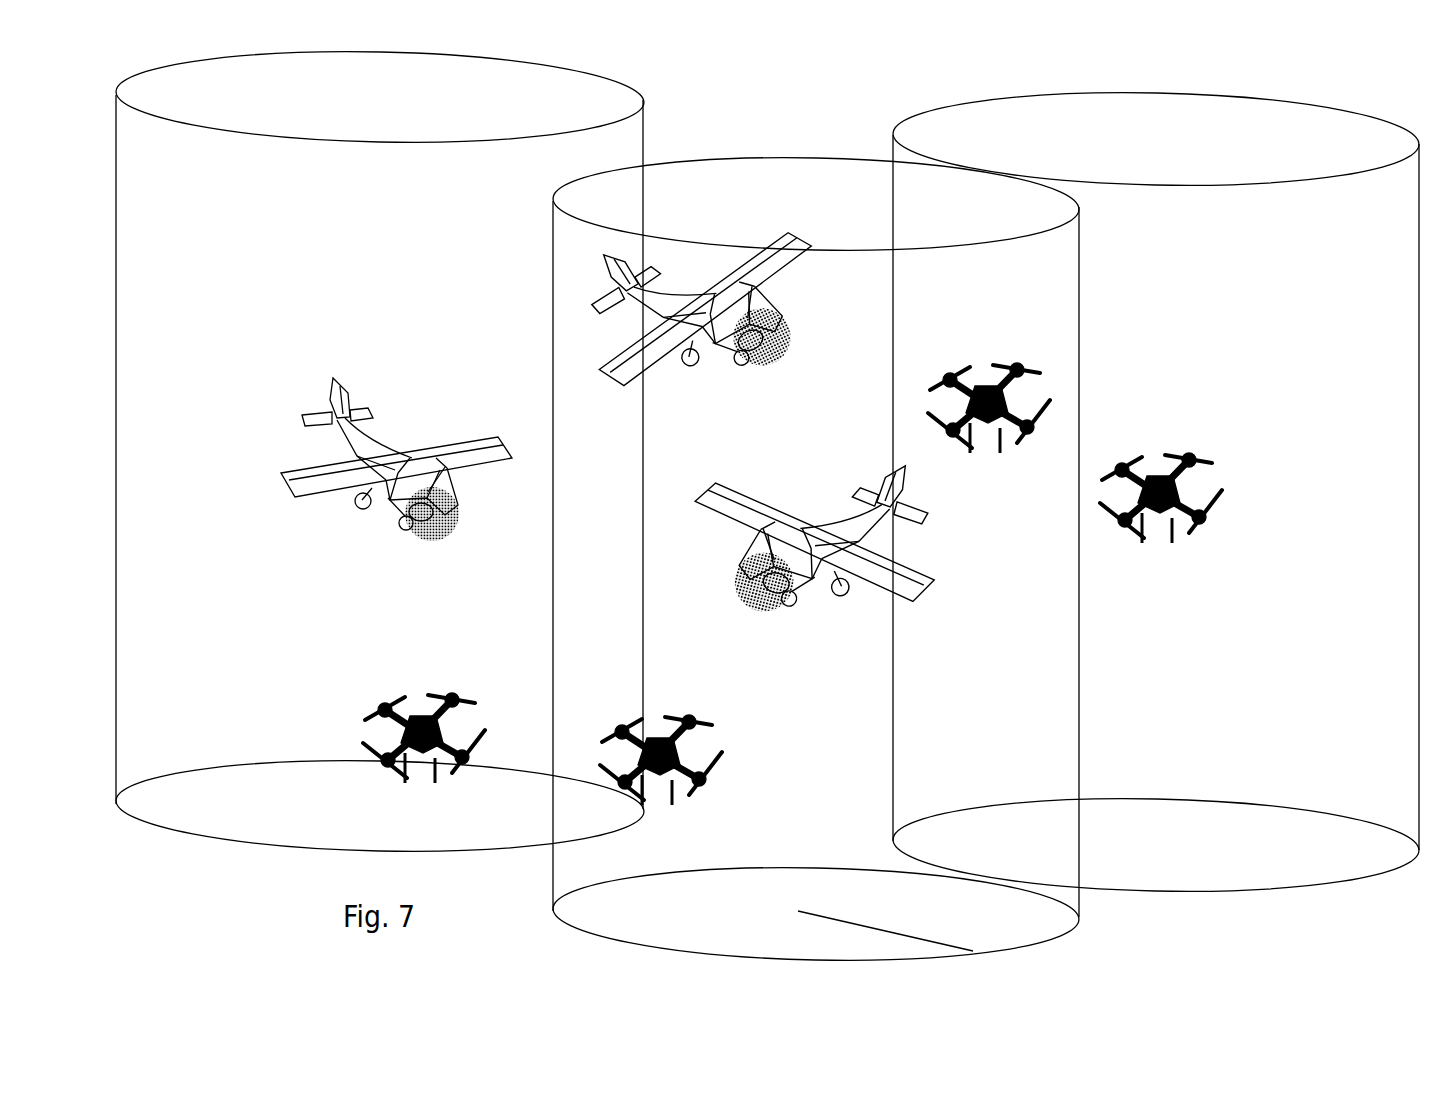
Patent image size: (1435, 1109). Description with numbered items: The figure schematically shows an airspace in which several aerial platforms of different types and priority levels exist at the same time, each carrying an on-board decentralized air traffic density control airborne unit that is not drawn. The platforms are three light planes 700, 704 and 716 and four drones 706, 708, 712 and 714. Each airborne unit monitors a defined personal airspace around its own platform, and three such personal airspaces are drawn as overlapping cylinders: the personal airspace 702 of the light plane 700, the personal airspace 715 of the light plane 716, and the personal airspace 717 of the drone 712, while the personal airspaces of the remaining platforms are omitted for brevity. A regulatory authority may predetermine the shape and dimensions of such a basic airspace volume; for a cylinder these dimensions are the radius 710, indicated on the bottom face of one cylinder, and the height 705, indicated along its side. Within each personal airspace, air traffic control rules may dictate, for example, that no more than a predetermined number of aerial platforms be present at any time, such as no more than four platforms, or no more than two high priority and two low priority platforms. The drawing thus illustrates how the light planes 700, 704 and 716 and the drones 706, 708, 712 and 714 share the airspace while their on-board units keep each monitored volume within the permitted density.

The light plane 700 is at (878, 590).
The personal airspace 702 is at (883, 559).
The light plane 704 is at (622, 285).
The height 705 is at (1079, 708).
The drone 706 is at (988, 390).
The drone 708 is at (693, 730).
The radius 710 is at (928, 942).
The drone 712 is at (1157, 477).
The drone 714 is at (408, 713).
The personal airspace 715 is at (643, 116).
The light plane 716 is at (332, 378).
The personal airspace 717 is at (1080, 92).